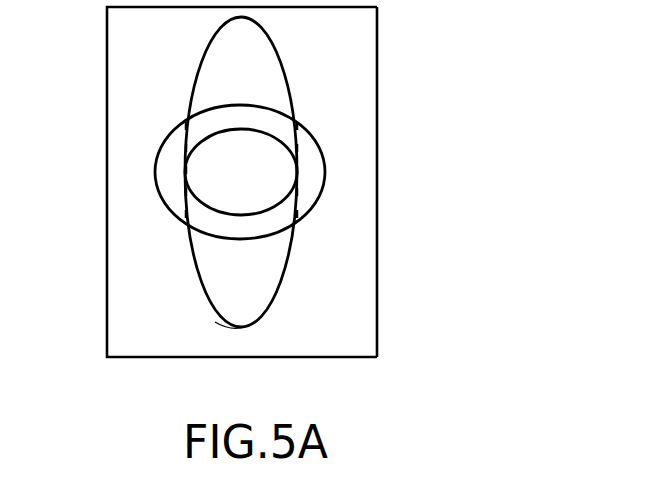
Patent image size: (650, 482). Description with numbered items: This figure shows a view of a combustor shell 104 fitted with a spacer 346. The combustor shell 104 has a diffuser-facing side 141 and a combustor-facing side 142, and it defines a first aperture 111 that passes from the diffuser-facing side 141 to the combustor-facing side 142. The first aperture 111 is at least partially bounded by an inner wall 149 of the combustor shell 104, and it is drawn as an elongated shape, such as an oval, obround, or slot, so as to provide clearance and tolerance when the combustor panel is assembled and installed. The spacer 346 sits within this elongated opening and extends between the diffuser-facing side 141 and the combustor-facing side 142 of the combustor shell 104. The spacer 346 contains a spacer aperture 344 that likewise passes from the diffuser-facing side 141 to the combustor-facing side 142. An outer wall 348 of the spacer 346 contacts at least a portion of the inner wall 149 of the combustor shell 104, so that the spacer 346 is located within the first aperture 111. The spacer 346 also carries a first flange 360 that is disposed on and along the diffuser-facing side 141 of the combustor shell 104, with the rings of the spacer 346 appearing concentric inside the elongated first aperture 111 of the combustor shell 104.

The combustor shell 104 is at (427, 281).
The first aperture 111 is at (210, 98).
The diffuser-facing side 141 is at (365, 65).
The combustor-facing side 142 is at (378, 231).
The inner wall 149 is at (225, 323).
The spacer aperture 344 is at (210, 187).
The spacer 346 is at (210, 262).
The outer wall 348 is at (210, 212).
The first flange 360 is at (210, 228).